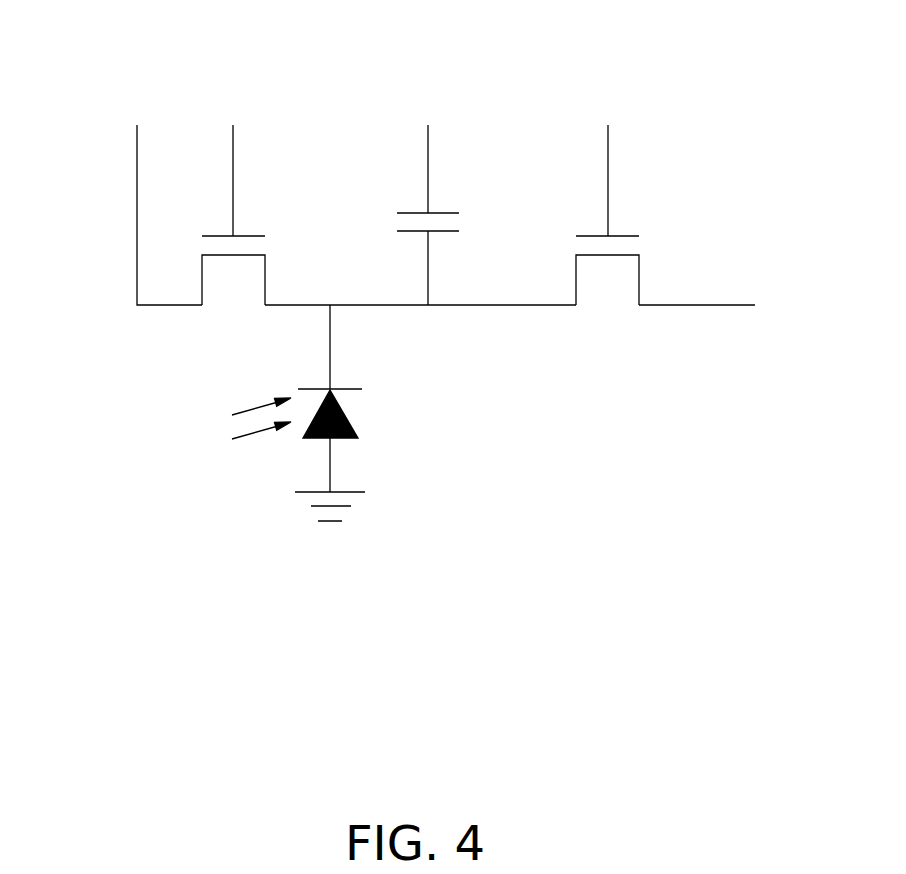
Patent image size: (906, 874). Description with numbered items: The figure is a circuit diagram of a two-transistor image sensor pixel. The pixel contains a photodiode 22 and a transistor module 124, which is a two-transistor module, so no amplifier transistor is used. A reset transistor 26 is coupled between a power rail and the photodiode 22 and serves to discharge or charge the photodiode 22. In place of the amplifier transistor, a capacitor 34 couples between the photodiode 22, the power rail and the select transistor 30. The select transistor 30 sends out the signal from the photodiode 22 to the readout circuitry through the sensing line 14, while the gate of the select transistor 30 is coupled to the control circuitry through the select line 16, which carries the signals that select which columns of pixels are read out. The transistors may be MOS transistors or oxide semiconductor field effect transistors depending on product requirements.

The transistor module 124 is at (441, 97).
The reset transistor 26 is at (237, 291).
The capacitor 34 is at (450, 199).
The select line 16 is at (608, 152).
The select transistor 30 is at (607, 291).
The sensing line 14 is at (713, 305).
The photodiode 22 is at (377, 417).